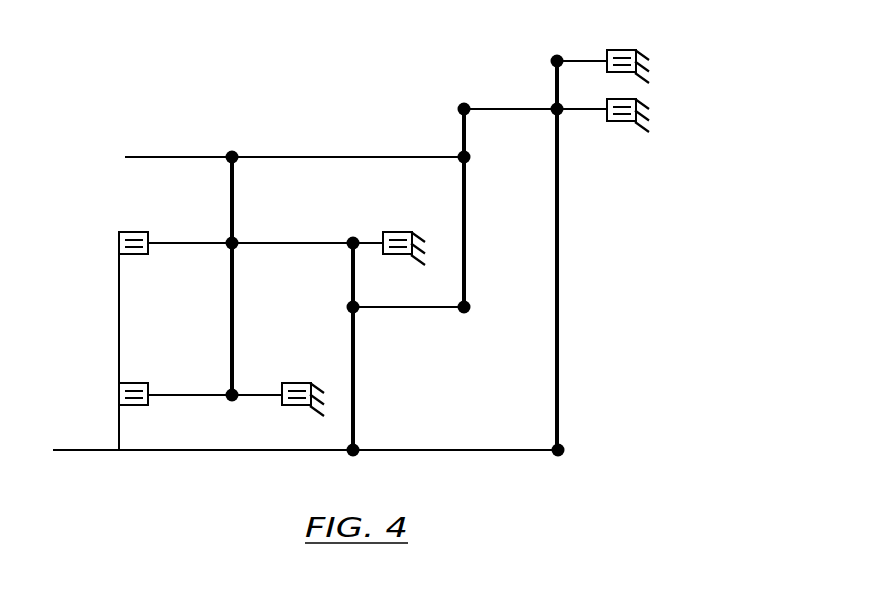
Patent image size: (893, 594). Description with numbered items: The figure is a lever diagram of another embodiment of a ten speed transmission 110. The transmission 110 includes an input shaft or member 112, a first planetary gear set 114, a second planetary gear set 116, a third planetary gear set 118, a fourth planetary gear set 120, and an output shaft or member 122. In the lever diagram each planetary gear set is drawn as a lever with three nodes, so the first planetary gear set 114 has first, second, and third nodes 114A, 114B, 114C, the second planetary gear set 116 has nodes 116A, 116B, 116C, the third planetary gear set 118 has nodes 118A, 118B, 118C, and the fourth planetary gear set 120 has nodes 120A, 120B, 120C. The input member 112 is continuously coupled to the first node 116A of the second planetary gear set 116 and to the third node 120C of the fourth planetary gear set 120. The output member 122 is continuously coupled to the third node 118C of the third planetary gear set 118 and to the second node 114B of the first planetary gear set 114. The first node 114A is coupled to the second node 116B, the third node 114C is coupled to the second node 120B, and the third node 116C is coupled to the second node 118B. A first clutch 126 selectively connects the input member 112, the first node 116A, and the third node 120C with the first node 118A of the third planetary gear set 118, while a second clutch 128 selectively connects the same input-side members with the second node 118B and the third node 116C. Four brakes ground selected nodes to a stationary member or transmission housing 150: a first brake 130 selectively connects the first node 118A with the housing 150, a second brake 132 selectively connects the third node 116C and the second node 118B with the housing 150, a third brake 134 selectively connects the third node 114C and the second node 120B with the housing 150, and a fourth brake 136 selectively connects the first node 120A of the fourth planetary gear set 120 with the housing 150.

The ten speed transmission 110 is at (721, 48).
The input shaft or member 112 is at (66, 452).
The first planetary gear set 114 is at (441, 138).
The first node of the first planetary gear set 114A is at (463, 314).
The second node of the first planetary gear set 114B is at (470, 156).
The third node of the first planetary gear set 114C is at (463, 102).
The second planetary gear set 116 is at (363, 226).
The first node of the second planetary gear set 116A is at (352, 458).
The second node of the second planetary gear set 116B is at (347, 306).
The third node of the second planetary gear set 116C is at (350, 238).
The third planetary gear set 118 is at (212, 146).
The first node of the third planetary gear set 118A is at (230, 402).
The second node of the third planetary gear set 118B is at (239, 239).
The third node of the third planetary gear set 118C is at (235, 151).
The fourth planetary gear set 120 is at (590, 211).
The first node of the fourth planetary gear set 120A is at (551, 61).
The second node of the fourth planetary gear set 120B is at (553, 104).
The third node of the fourth planetary gear set 120C is at (563, 449).
The output shaft or member 122 is at (180, 159).
The first clutch 126 is at (138, 382).
The second clutch 128 is at (128, 231).
The first brake 130 is at (289, 382).
The second brake 132 is at (395, 256).
The third brake 134 is at (613, 122).
The fourth brake 136 is at (618, 72).
The stationary member or transmission housing 150 is at (422, 233).